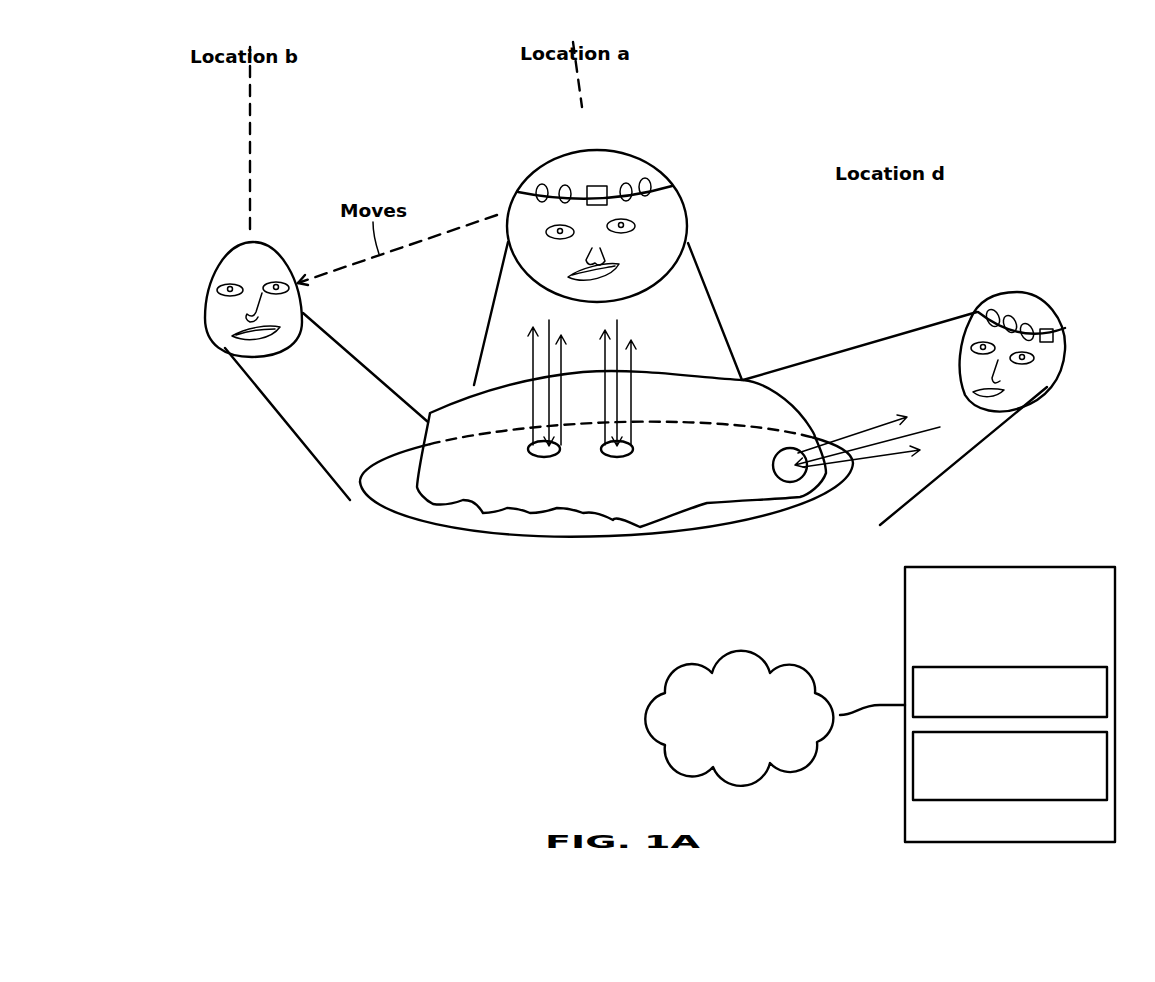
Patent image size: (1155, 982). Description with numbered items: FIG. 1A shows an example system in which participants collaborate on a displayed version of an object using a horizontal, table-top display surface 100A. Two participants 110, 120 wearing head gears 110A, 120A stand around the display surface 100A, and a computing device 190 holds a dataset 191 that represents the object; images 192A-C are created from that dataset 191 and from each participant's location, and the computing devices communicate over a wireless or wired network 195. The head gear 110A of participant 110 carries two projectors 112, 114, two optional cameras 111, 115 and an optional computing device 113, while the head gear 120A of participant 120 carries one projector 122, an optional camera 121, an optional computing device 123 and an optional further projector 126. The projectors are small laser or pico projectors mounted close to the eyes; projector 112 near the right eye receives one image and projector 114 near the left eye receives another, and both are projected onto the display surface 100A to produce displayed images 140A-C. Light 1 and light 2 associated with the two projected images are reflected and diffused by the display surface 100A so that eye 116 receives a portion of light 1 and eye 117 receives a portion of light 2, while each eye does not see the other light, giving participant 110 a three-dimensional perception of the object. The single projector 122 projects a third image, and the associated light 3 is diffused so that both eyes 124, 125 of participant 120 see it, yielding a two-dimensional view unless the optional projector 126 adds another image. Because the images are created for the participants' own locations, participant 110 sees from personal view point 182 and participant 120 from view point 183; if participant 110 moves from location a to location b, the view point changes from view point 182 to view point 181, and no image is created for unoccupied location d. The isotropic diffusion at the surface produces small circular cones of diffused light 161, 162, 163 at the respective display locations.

The horizontal display surface 100A is at (595, 538).
The participant 110 is at (688, 209).
The head gear 110A is at (665, 183).
The camera 111 is at (538, 186).
The projector 112 is at (563, 185).
The computing device 113 is at (597, 186).
The projector 114 is at (628, 183).
The camera 115 is at (648, 180).
The eye 116 is at (554, 237).
The eye 117 is at (622, 229).
The participant 120 is at (1068, 360).
The head gear 120A is at (985, 310).
The camera 121 is at (1013, 318).
The projector 122 is at (1032, 325).
The computing device 123 is at (1052, 328).
The eye 124 is at (975, 354).
The eye 125 is at (1020, 364).
The optional projector 126 is at (995, 310).
The displayed images 140A-C is at (621, 449).
The cone of diffused light 161 is at (527, 447).
The cone of diffused light 162 is at (633, 452).
The cone of diffused light 163 is at (790, 482).
The light 1 is at (551, 321).
The light 2 is at (620, 321).
The light 3 is at (930, 428).
The view point 181 is at (259, 390).
The view point 182 is at (706, 288).
The view point 183 is at (960, 460).
The computing device 190 is at (1010, 704).
The dataset 191 is at (1010, 692).
The images 192A-C is at (1010, 766).
The network 195 is at (775, 718).